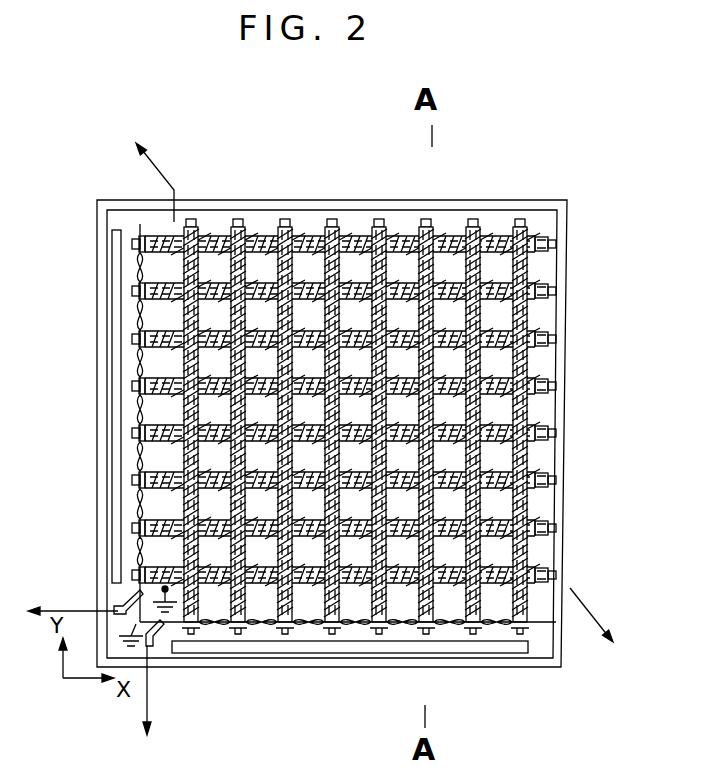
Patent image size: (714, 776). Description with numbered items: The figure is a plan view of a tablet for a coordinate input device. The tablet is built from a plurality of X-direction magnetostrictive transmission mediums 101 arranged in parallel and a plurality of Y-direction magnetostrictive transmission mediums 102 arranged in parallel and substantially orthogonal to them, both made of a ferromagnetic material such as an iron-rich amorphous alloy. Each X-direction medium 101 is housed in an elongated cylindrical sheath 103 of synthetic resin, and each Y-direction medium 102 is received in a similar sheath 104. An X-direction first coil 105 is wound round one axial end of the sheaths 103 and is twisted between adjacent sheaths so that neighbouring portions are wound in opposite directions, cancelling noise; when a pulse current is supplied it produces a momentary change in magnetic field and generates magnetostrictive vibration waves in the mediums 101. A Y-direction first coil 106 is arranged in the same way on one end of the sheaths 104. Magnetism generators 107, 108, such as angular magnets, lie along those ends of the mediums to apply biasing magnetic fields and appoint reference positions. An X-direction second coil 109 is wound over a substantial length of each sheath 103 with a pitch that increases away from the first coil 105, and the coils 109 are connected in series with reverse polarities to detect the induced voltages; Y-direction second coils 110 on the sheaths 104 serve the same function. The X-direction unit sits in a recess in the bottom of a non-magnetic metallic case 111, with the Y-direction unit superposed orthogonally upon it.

The X-direction magnetostrictive transmission medium 101 is at (556, 244).
The Y-direction magnetostrictive transmission medium 102 is at (203, 228).
The sheath 103 is at (552, 251).
The sheath 104 is at (193, 219).
The X-direction first coil 105 is at (121, 600).
The Y-direction first coil 106 is at (154, 641).
The magnetism generator 107 is at (110, 442).
The magnetism generator 108 is at (482, 647).
The X-direction second coil 109 is at (552, 237).
The Y-direction second coil 110 is at (182, 226).
The metallic case 111 is at (563, 660).